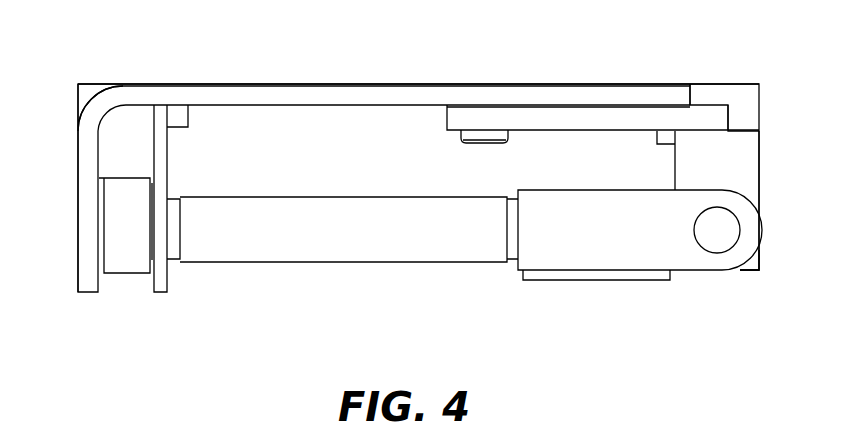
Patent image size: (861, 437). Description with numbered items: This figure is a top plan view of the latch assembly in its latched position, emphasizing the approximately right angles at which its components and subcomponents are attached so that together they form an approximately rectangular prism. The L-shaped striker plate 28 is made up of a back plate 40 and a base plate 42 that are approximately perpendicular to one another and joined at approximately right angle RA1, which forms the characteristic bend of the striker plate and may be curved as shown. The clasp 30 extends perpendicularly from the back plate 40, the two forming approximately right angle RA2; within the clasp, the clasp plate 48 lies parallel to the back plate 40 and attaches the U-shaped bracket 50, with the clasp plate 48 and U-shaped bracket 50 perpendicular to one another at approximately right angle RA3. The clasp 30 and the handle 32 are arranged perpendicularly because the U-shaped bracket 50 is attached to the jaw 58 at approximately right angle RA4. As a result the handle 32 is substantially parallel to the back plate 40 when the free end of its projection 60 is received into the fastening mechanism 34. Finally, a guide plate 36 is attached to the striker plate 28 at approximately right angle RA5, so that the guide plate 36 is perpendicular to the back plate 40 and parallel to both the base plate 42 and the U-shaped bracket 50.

The striker plate 28 is at (389, 58).
The clasp 30 is at (781, 110).
The handle 32 is at (489, 293).
The fastening mechanism 34 is at (122, 263).
The guide plate 36 is at (160, 168).
The back plate 40 is at (355, 92).
The base plate 42 is at (79, 222).
The clasp plate 48 is at (560, 133).
The U-shaped bracket 50 is at (752, 153).
The jaw 58 is at (592, 272).
The projection 60 is at (348, 256).
The approximately right angle 1 RA1 is at (87, 88).
The approximately right angle 2 RA2 is at (742, 88).
The approximately right angle 3 RA3 is at (656, 138).
The approximately right angle 4 RA4 is at (757, 272).
The approximately right angle 5 RA5 is at (188, 127).